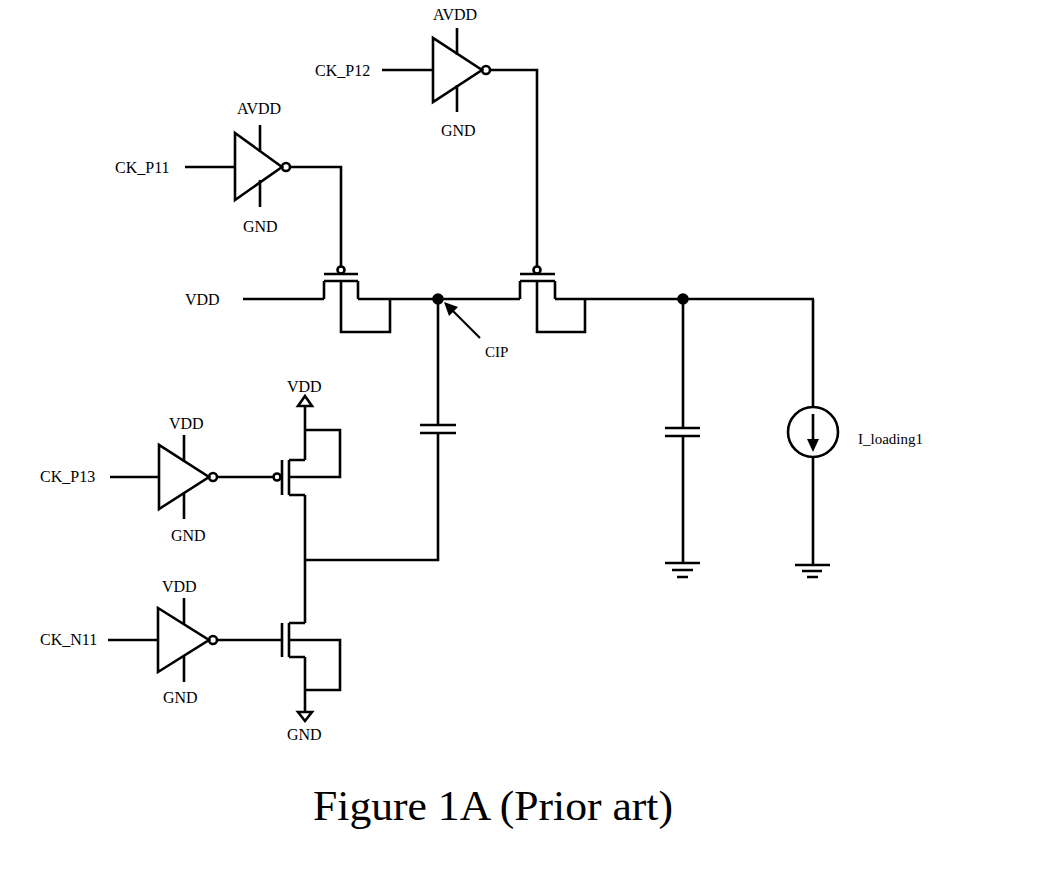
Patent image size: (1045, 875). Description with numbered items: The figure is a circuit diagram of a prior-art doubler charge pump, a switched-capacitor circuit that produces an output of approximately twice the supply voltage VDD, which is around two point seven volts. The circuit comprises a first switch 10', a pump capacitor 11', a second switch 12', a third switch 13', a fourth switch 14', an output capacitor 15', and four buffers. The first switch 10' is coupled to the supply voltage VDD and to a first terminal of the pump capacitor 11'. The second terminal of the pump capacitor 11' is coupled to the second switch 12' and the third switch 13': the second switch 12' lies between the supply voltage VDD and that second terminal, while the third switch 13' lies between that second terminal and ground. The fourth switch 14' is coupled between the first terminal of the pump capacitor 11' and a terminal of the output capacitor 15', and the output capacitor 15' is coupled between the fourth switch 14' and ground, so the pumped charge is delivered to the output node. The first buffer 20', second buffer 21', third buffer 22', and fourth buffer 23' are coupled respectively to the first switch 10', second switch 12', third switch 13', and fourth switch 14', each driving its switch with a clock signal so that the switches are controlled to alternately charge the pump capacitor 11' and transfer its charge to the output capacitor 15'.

The first switch 10' is at (387, 293).
The pump capacitor 11' is at (483, 411).
The second switch 12' is at (353, 462).
The third switch 13' is at (358, 656).
The fourth switch 14' is at (584, 293).
The output capacitor 15' is at (724, 413).
The first buffer 20' is at (295, 193).
The second buffer 21' is at (221, 474).
The third buffer 22' is at (220, 634).
The fourth buffer 23' is at (495, 145).